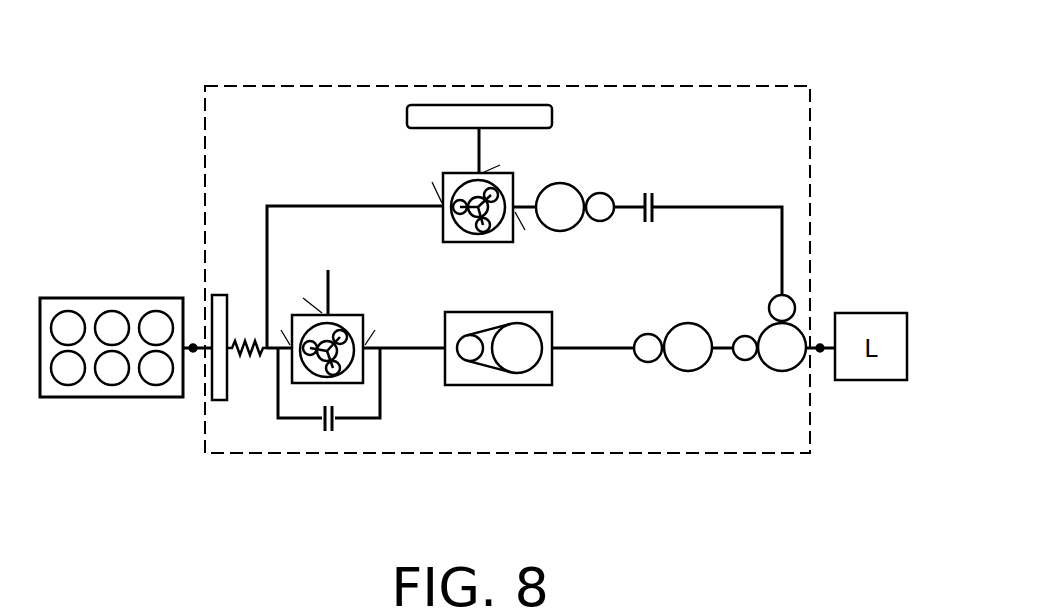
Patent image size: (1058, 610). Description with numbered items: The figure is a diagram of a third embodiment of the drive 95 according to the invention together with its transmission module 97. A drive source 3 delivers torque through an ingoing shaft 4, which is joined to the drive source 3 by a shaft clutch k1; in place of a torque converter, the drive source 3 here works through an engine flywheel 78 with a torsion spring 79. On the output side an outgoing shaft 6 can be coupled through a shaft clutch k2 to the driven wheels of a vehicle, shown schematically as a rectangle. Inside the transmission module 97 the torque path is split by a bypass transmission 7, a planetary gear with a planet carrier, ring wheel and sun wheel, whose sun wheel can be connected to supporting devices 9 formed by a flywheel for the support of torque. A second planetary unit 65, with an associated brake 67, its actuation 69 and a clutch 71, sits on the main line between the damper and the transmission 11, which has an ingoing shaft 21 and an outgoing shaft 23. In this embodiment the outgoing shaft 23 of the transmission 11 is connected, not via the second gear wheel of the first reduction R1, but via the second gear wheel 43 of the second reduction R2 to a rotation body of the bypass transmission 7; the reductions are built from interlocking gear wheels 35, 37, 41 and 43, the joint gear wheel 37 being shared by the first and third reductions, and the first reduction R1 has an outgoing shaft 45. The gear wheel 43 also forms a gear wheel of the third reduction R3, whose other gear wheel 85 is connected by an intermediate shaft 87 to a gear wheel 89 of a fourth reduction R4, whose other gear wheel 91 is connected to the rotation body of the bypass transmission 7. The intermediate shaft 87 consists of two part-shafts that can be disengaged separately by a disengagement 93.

The drive source 3 is at (103, 297).
The ingoing shaft 4 is at (203, 355).
The outgoing shaft 6 is at (812, 352).
The bypass transmission 7 is at (470, 245).
The supporting devices 9 is at (498, 112).
The transmission 11 is at (505, 387).
The ingoing shaft of the transmission 21 is at (430, 352).
The outgoing shaft of the transmission 23 is at (575, 352).
The gear wheel 35 is at (645, 343).
The joint gear wheel 37 is at (687, 350).
The gear wheel 41 is at (743, 352).
The second gear wheel of the second reduction 43 is at (780, 353).
The outgoing shaft of the first reduction 45 is at (718, 352).
The planetary gear set 65 is at (363, 315).
The brake 67 is at (329, 267).
The brake actuation 69 is at (323, 292).
The clutch 71 is at (326, 434).
The engine flywheel 78 is at (223, 295).
The torsion spring 79 is at (247, 342).
The gear wheel 85 is at (777, 302).
The intermediate shaft 87 is at (698, 205).
The gear wheel of the fourth reduction 89 is at (600, 198).
The gear wheel 91 is at (560, 197).
The disengagement 93 is at (648, 226).
The drive 95 is at (158, 130).
The transmission module 97 is at (413, 83).
The first reduction R1 is at (660, 367).
The second reduction R2 is at (755, 367).
The third reduction R3 is at (763, 320).
The fourth reduction R4 is at (585, 187).
The shaft clutch k1 is at (193, 344).
The shaft clutch k2 is at (820, 344).